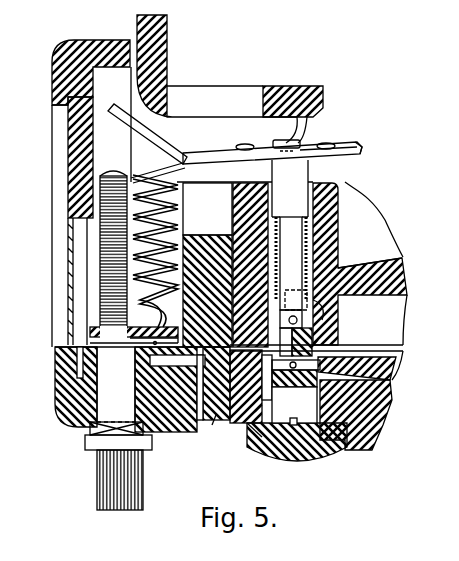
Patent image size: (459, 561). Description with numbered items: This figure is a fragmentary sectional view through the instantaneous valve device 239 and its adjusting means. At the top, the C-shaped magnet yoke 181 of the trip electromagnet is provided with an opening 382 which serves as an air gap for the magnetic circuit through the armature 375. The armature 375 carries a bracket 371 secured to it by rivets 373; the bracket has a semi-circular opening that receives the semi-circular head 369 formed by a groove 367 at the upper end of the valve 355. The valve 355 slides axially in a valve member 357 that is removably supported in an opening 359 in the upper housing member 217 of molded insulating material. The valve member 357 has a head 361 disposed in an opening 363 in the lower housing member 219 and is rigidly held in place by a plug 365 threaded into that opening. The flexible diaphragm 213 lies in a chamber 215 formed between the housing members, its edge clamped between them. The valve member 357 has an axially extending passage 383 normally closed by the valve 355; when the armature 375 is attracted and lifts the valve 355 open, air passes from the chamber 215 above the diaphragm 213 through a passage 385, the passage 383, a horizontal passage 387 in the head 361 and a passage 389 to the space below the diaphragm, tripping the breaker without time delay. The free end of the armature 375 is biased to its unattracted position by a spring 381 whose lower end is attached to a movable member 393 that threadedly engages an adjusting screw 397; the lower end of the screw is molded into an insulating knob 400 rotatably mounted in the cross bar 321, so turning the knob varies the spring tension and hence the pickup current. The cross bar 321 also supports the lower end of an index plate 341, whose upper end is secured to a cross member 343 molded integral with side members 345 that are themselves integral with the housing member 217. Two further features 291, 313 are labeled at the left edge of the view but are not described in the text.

The magnet yoke 181 is at (170, 39).
The opening 382 is at (238, 87).
The cross member 343 is at (77, 41).
The side members 345 is at (68, 113).
The index plate 341 is at (70, 230).
The adjusting screw 397 is at (100, 254).
The movable member 393 is at (93, 328).
The spring 381 is at (179, 214).
The rivets 373 is at (248, 146).
The semi-circular head 369 is at (292, 150).
The groove 367 is at (304, 158).
The bracket 371 is at (350, 156).
The armature 375 is at (363, 150).
The upper housing member 217 is at (342, 200).
The opening 359 is at (336, 218).
The valve 355 is at (297, 243).
The valve member 357 is at (337, 263).
The passage 385 is at (318, 320).
The axially extending passage 383 is at (312, 347).
The passage 389 is at (330, 360).
The chamber 215 is at (400, 332).
The flexible diaphragm 213 is at (384, 398).
The lower housing member 219 is at (212, 425).
The opening 363 is at (258, 411).
The head 361 is at (262, 437).
The plug 365 is at (276, 462).
The horizontal passage 387 is at (296, 392).
The insulating knob 400 is at (96, 474).
The cross bar 321 is at (57, 396).
The passage 291 is at (10, 369).
The passage 313 is at (10, 388).
The instantaneous valve device 239 is at (352, 489).